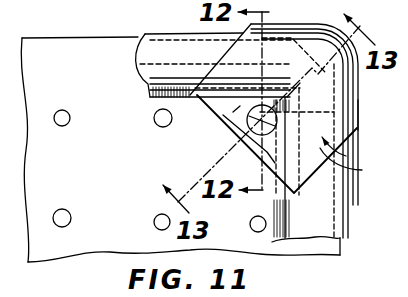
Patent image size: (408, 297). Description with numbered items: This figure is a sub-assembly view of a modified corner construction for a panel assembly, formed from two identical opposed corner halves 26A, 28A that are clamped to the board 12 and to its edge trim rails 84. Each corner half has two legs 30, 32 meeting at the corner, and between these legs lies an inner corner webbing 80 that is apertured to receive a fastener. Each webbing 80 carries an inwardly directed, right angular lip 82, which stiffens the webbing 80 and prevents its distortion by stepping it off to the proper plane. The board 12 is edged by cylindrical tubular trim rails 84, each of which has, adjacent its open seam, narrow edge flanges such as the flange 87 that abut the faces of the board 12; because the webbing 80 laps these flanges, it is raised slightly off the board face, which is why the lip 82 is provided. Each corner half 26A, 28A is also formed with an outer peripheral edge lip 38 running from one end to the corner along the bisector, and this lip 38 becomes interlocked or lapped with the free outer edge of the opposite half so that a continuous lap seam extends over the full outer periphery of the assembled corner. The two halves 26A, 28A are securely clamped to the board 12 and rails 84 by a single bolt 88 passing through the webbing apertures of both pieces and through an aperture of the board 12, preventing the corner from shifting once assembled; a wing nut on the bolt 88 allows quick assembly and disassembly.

The board 12 is at (42, 50).
The corner half 26A is at (358, 113).
The corner half 28A is at (345, 147).
The leg 30 is at (291, 144).
The leg 32 is at (222, 50).
The outer peripheral edge lip 38 is at (297, 26).
The inner corner webbing 80 is at (212, 108).
The lip 82 is at (233, 128).
The edge trim rail 84 is at (140, 58).
The edge flange 87 is at (150, 96).
The bolt 88 is at (282, 103).